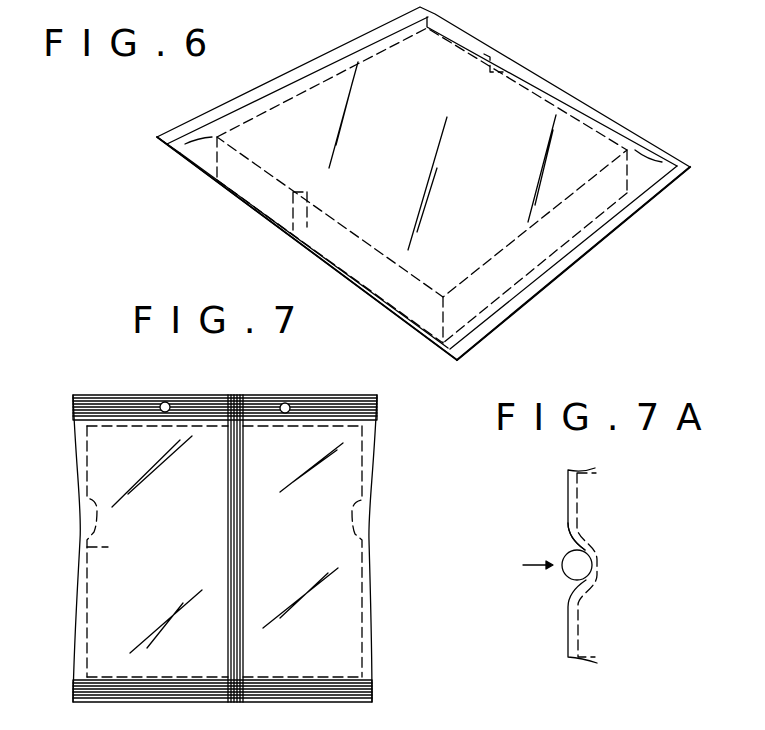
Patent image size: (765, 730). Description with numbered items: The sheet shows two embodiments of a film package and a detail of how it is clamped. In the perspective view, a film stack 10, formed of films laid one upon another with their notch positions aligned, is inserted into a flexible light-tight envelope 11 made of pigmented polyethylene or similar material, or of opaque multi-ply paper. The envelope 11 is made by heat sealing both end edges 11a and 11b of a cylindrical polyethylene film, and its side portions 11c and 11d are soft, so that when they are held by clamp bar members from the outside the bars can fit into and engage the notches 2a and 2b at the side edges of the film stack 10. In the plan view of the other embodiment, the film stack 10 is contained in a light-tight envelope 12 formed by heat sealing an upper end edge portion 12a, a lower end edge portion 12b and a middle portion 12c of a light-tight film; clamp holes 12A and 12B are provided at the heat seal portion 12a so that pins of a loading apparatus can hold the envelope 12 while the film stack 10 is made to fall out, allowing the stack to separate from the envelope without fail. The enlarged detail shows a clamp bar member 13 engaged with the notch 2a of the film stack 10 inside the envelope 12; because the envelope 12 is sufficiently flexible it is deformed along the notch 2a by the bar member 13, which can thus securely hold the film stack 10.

In FIG. 6, the light-tight envelope 11 is at (483, 47).
In FIG. 6, the end edge 11a is at (302, 68).
In FIG. 6, the end edge 11b is at (580, 257).
In FIG. 6, the side portion 11c is at (290, 217).
In FIG. 6, the side portion 11d is at (593, 113).
In FIG. 6, the film stack 10 is at (530, 122).
In FIG. 7, the film stack 10 is at (80, 547).
In FIG. 7A, the film stack 10 is at (580, 625).
In FIG. 6, the notch 2a is at (283, 232).
In FIG. 7A, the notch 2a is at (580, 533).
In FIG. 6, the notch 2b is at (500, 60).
In FIG. 7, the light-tight envelope 12 is at (80, 494).
In FIG. 7A, the light-tight envelope 12 is at (568, 500).
In FIG. 7, the heat seal portion 12a is at (122, 400).
In FIG. 7, the lower end edge portion 12b is at (73, 697).
In FIG. 7, the middle portion 12c is at (242, 560).
In FIG. 7, the clamp hole 12A is at (165, 398).
In FIG. 7, the clamp hole 12B is at (288, 397).
In FIG. 7A, the clamp bar member 13 is at (570, 568).